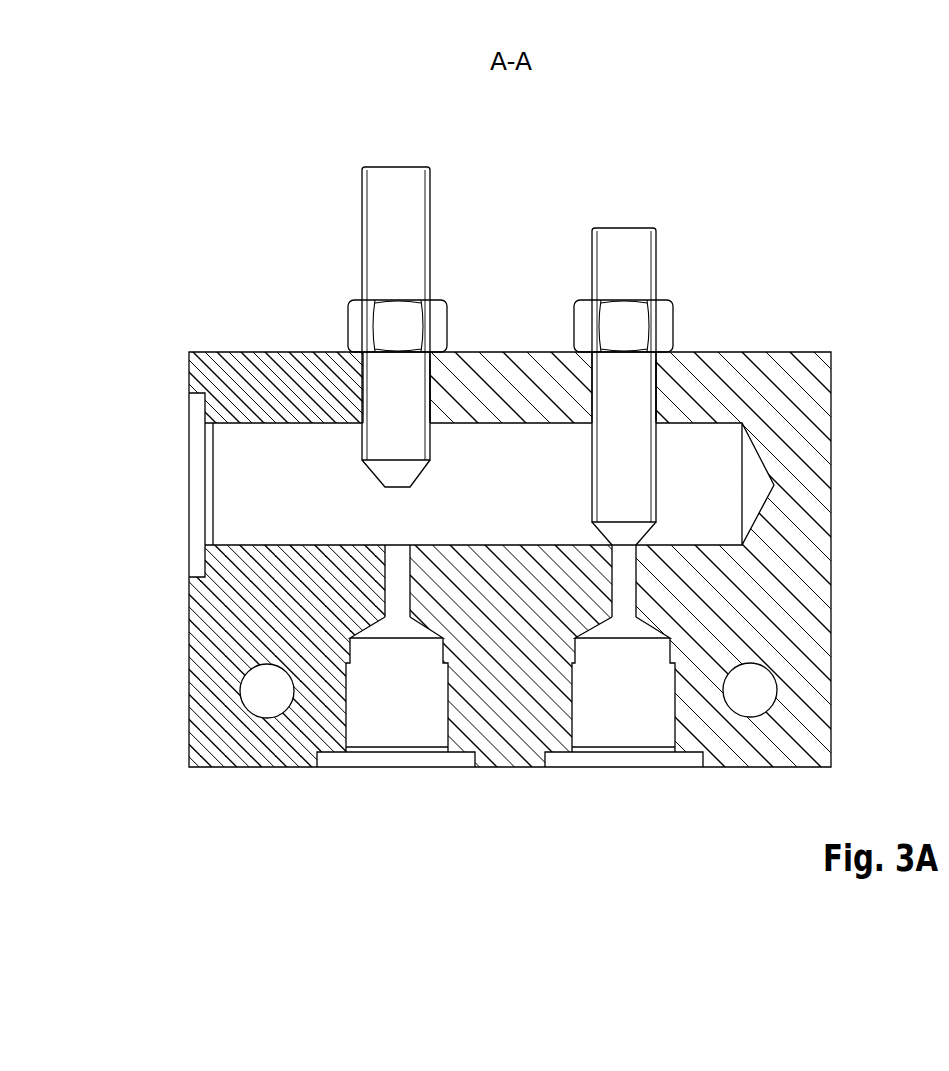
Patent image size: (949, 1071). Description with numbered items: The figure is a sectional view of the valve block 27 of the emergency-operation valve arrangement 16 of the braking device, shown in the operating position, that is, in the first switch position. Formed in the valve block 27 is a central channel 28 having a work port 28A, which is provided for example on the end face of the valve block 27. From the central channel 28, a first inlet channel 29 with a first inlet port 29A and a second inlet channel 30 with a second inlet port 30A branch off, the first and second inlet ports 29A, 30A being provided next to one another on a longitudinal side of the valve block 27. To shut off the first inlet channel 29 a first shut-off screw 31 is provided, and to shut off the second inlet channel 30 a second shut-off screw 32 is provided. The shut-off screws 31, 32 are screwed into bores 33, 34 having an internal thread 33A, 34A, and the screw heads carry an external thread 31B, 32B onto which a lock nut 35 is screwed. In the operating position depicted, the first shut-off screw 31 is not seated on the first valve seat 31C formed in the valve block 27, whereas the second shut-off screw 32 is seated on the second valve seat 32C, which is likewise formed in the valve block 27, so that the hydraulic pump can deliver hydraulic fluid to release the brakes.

The emergency-operation valve arrangement 16 is at (812, 169).
The valve block 27 is at (845, 597).
The central channel 28 is at (237, 443).
The work port 28A is at (190, 486).
The first inlet channel 29 is at (398, 592).
The first inlet port 29A is at (396, 788).
The second inlet channel 30 is at (620, 592).
The second inlet port 30A is at (625, 788).
The first shut-off screw 31 is at (397, 150).
The external thread 31B is at (362, 232).
The first valve seat 31C is at (388, 545).
The second shut-off screw 32 is at (625, 200).
The external thread 32B is at (592, 254).
The second valve seat 32C is at (612, 544).
The bore 33 is at (410, 373).
The internal thread 33A is at (432, 392).
The bore 34 is at (638, 378).
The internal thread 34A is at (652, 388).
The lock nut 35 is at (348, 330).